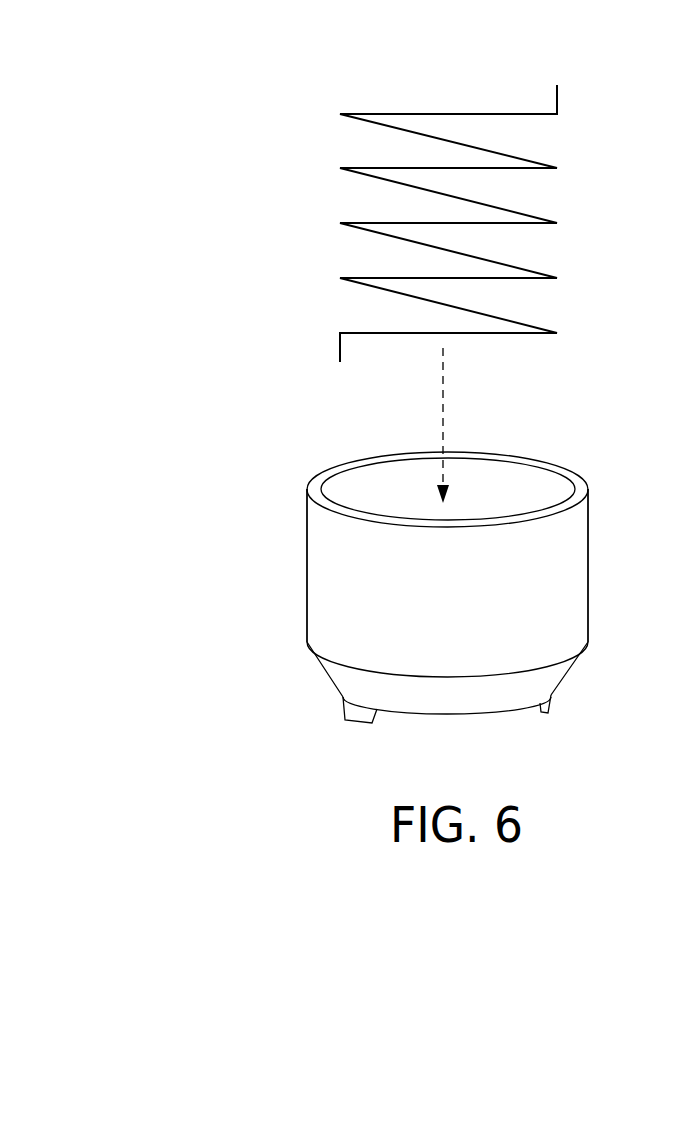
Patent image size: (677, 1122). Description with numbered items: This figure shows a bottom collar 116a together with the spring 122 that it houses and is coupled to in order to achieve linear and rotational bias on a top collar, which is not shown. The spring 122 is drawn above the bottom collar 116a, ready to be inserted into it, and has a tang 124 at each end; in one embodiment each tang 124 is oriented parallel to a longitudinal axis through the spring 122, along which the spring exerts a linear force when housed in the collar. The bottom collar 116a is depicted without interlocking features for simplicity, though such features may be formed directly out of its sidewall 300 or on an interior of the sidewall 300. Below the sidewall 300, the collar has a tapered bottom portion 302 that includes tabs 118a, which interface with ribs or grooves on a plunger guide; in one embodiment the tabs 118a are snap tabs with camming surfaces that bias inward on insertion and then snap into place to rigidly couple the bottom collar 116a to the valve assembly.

The spring 122 is at (281, 220).
The tang 124 is at (564, 93).
The sidewall 300 is at (575, 478).
The tapered bottom portion 302 is at (488, 693).
The bottom collar 116a is at (281, 538).
The tabs 118a is at (353, 709).